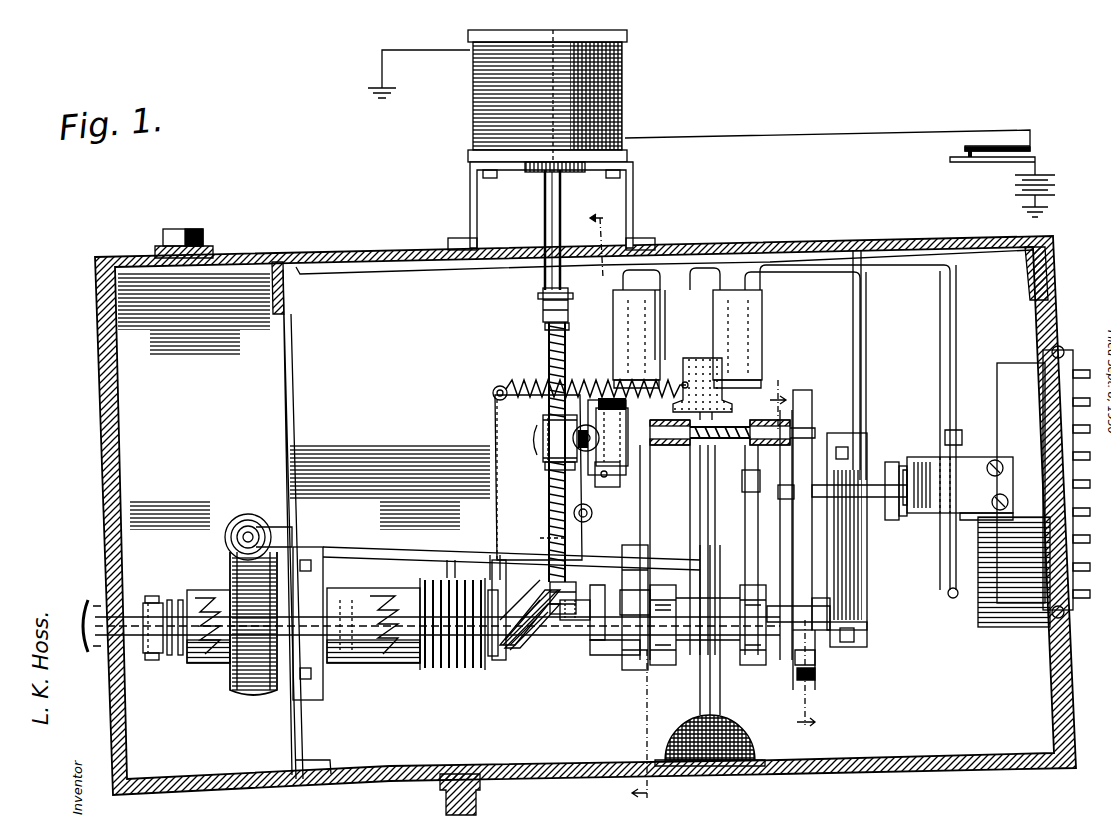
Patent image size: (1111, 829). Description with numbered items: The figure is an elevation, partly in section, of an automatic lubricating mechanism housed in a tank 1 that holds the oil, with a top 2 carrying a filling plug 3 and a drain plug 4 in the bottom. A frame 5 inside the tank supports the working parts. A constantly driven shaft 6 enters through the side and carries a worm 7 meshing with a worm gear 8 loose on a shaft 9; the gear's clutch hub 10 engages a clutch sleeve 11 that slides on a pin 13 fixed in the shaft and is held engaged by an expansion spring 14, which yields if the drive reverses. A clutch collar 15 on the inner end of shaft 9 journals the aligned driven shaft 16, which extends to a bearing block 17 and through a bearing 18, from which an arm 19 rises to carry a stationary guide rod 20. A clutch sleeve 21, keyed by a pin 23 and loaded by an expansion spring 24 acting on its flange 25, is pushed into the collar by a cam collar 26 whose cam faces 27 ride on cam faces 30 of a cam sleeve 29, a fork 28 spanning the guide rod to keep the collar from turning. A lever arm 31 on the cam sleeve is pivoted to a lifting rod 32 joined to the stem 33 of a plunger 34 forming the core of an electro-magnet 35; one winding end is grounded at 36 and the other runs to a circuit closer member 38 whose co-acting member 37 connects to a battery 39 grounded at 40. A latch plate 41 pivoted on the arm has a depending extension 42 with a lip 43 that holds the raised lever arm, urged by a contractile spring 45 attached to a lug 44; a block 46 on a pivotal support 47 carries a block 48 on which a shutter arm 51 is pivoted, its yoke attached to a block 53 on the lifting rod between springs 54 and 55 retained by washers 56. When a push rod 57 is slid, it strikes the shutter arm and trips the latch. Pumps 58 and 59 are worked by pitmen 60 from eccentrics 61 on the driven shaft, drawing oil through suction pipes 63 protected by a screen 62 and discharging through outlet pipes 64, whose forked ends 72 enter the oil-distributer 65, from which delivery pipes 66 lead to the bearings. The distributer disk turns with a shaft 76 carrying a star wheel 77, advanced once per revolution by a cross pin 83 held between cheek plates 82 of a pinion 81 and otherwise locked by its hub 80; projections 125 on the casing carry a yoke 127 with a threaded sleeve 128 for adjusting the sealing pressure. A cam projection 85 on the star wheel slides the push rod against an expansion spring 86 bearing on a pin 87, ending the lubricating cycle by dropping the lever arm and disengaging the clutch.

The tank 1 is at (95, 348).
The top 2 is at (248, 262).
The filling plug 3 is at (163, 250).
The drain plug 4 is at (468, 774).
The frame 5 is at (853, 331).
The shaft 6 is at (238, 536).
The worm 7 is at (248, 514).
The worm gear 8 is at (254, 692).
The shaft 9 is at (133, 615).
The clutch hub 10 is at (222, 665).
The clutch sleeve 11 is at (200, 592).
The pin 13 is at (155, 660).
The expansion spring 14 is at (170, 600).
The clutch collar 15 is at (362, 665).
The driven shaft 16 is at (535, 650).
The bearing block 17 is at (862, 640).
The bearing 18 is at (625, 672).
The arm 19 is at (650, 522).
The guide rod 20 is at (394, 556).
The clutch sleeve 21 is at (405, 665).
The pin 23 is at (432, 670).
The expansion spring 24 is at (447, 558).
The flange 25 is at (485, 660).
The cam collar 26 is at (515, 648).
The cam faces 27 is at (500, 560).
The fork 28 is at (490, 560).
The cam sleeve 29 is at (590, 640).
The cam faces 30 is at (522, 640).
The lever arm 31 is at (565, 625).
The lifting rod 32 is at (549, 354).
The stem 33 is at (545, 214).
The plunger 34 is at (535, 172).
The electro-magnet 35 is at (622, 104).
The ground 36 is at (408, 74).
The circuit closer member 37 is at (1005, 165).
The circuit closer member 38 is at (995, 145).
The battery 39 is at (1045, 175).
The ground 40 is at (1022, 214).
The latch plate 41 is at (543, 432).
The depending extension 42 is at (640, 592).
The lip 43 is at (600, 658).
The lug 44 is at (493, 395).
The contractile spring 45 is at (512, 388).
The block 46 is at (620, 470).
The pivotal support 47 is at (545, 468).
The block 48 is at (590, 400).
The shutter arm 51 is at (618, 405).
The block 53 is at (556, 440).
The spring 54 is at (545, 330).
The spring 55 is at (549, 510).
The washers 56 is at (568, 320).
The push rod 57 is at (792, 490).
The pump 58 is at (636, 339).
The pump 59 is at (737, 339).
The pitmen 60 is at (693, 532).
The eccentrics 61 is at (664, 667).
The screen 62 is at (745, 738).
The suction pipes 63 is at (700, 706).
The outlet pipes 64 is at (780, 262).
The oil-distributer 65 is at (1020, 355).
The delivery pipes 66 is at (1064, 352).
The forked ends 72 is at (950, 450).
The shaft 76 is at (880, 482).
The star wheel 77 is at (835, 436).
The hub 80 is at (835, 612).
The pinion 81 is at (818, 678).
The cheek plates 82 is at (816, 664).
The cross pin 83 is at (818, 690).
The cam projection 85 is at (812, 397).
The expansion spring 86 is at (748, 455).
The pin 87 is at (762, 500).
The projections 125 is at (990, 520).
The yoke 127 is at (918, 457).
The sleeve 128 is at (905, 513).